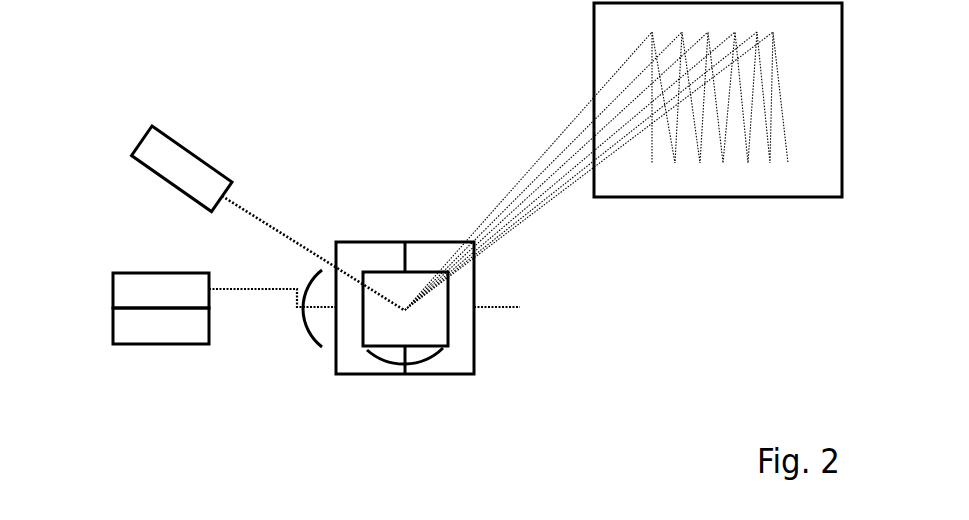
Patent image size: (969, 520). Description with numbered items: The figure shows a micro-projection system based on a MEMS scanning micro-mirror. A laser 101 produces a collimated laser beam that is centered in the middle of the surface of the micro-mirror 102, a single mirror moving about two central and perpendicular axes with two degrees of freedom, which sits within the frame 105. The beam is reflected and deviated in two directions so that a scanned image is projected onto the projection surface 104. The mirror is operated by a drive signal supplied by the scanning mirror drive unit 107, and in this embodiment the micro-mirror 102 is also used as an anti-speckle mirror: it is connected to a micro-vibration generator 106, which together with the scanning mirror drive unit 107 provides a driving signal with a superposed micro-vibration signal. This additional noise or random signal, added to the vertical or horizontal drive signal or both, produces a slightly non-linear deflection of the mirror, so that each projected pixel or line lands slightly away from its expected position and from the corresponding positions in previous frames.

The laser 101 is at (159, 139).
The micro-mirror 102 is at (428, 325).
The projection surface 104 is at (765, 197).
The frame 105 is at (352, 374).
The micro-vibration generator 106 is at (120, 327).
The scanning mirror drive unit 107 is at (120, 290).